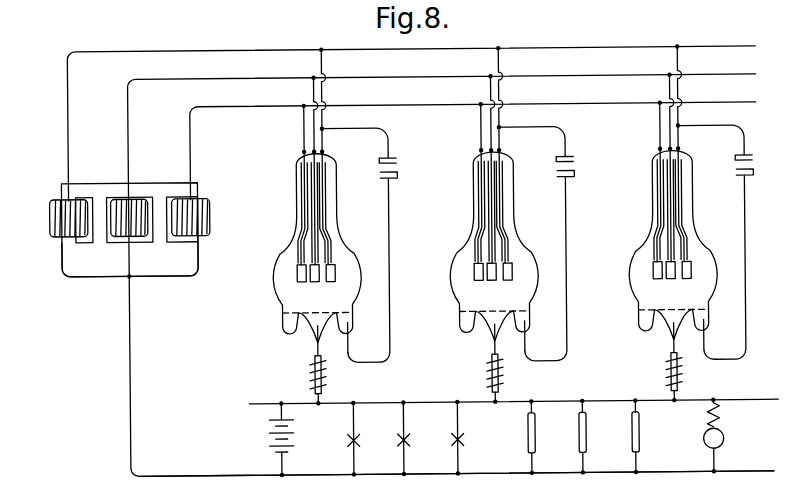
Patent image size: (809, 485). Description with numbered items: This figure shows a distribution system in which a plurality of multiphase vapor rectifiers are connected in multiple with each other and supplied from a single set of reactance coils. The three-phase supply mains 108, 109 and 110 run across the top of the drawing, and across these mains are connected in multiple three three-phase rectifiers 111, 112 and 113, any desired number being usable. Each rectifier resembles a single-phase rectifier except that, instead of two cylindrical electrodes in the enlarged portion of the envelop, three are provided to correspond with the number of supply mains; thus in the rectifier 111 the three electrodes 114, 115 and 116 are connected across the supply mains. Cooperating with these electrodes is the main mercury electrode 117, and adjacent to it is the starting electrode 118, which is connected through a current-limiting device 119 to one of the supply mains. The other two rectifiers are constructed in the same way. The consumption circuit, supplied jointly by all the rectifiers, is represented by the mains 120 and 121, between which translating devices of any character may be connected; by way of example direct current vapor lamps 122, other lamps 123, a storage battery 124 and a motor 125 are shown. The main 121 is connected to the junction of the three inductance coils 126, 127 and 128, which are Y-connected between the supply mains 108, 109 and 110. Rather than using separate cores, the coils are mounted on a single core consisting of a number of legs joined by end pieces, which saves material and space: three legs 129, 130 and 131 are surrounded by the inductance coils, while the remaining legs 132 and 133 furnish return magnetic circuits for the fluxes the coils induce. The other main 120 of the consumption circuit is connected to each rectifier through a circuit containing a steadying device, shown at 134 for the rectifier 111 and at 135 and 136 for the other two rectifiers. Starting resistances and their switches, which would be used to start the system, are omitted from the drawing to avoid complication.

The three-phase main 108 is at (223, 49).
The three-phase main 109 is at (223, 77).
The three-phase main 110 is at (223, 105).
The three-phase rectifier 111 is at (302, 195).
The three-phase rectifier 112 is at (456, 255).
The three-phase rectifier 113 is at (636, 252).
The electrode 114 is at (301, 281).
The electrode 115 is at (314, 283).
The electrode 116 is at (330, 283).
The main mercury electrode 117 is at (314, 327).
The starting electrode 118 is at (349, 325).
The current-limiting device 119 is at (397, 166).
The main of consumption circuit 120 is at (262, 398).
The main of consumption circuit 121 is at (260, 459).
The direct current vapor lamps 122 is at (633, 446).
The lamps 123 is at (405, 438).
The storage battery 124 is at (285, 443).
The motor 125 is at (730, 441).
The inductance coil 126 is at (69, 205).
The inductance coil 127 is at (137, 202).
The inductance coil 128 is at (191, 203).
The core leg 129 is at (75, 231).
The core leg 130 is at (130, 233).
The core leg 131 is at (192, 231).
The return core leg 132 is at (100, 236).
The return core leg 133 is at (163, 236).
The steadying device 134 is at (328, 380).
The steadying device 135 is at (505, 383).
The steadying device 136 is at (683, 382).